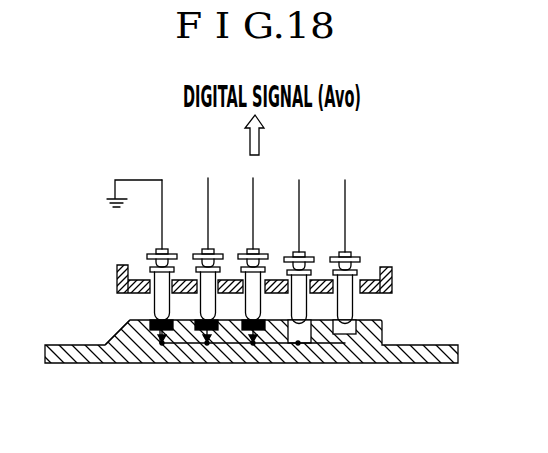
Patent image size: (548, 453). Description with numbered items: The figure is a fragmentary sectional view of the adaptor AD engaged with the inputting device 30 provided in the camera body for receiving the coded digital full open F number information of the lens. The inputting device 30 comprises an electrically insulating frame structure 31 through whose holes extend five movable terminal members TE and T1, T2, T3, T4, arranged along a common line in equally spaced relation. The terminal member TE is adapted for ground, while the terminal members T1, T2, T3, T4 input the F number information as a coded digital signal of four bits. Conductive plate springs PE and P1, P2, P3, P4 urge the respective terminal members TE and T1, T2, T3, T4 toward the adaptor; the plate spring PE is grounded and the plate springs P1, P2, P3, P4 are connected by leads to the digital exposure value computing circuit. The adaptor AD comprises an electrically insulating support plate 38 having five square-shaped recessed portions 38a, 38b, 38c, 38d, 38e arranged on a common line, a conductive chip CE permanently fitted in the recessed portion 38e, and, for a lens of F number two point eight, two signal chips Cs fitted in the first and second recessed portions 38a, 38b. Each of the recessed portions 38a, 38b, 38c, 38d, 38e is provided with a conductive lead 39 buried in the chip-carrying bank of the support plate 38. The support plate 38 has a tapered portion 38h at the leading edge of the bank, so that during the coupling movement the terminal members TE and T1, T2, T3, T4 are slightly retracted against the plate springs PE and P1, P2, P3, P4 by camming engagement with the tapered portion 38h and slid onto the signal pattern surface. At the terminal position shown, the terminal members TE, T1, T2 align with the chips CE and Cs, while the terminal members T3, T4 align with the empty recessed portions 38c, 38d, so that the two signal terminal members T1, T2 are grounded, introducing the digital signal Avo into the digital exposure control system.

The inputting device 30 is at (261, 251).
The electrically insulating frame structure 31 is at (118, 273).
The electrically insulating semi-arcuate support plate 38 is at (405, 364).
The first recessed portion 38a is at (218, 362).
The second recessed portion 38b is at (272, 362).
The recessed portion 38c is at (312, 333).
The recessed portion 38d is at (353, 334).
The recessed portion 38e is at (175, 362).
The tapered portion 38h is at (117, 328).
The conductive lead 39 is at (305, 362).
The adaptor AD is at (250, 355).
The conductive plate spring PE is at (156, 252).
The conductive plate spring P1 is at (200, 253).
The conductive plate spring P2 is at (248, 253).
The conductive plate spring P3 is at (293, 255).
The conductive plate spring P4 is at (337, 255).
The ground terminal member TE is at (154, 305).
The terminal member T1 is at (200, 305).
The terminal member T2 is at (245, 305).
The terminal member T3 is at (291, 305).
The terminal member T4 is at (332, 299).
The conductive chip CE is at (156, 362).
The signal chip Cs is at (206, 362).